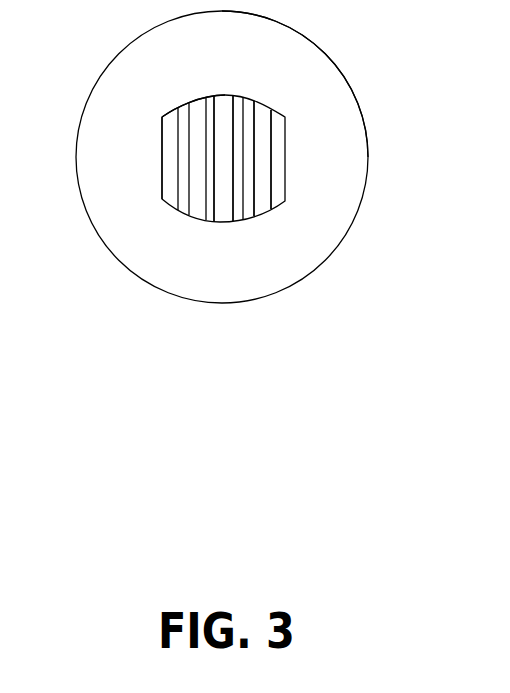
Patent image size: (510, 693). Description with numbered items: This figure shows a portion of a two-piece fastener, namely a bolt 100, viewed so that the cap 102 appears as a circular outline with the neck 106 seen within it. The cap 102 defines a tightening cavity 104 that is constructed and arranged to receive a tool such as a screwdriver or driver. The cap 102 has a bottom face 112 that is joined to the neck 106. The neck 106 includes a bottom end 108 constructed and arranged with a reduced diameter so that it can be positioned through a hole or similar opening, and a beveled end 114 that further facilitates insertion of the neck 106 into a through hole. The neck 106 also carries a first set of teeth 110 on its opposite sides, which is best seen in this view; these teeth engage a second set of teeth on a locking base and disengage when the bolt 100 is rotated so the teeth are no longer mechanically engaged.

The bolt 100 is at (320, 37).
The cap 102 is at (368, 121).
The tightening cavity 104 is at (223, 158).
The neck 106 is at (262, 192).
The bottom end 108 is at (213, 193).
The first set of teeth 110 is at (163, 178).
The bottom face 112 is at (338, 158).
The beveled end 114 is at (198, 113).